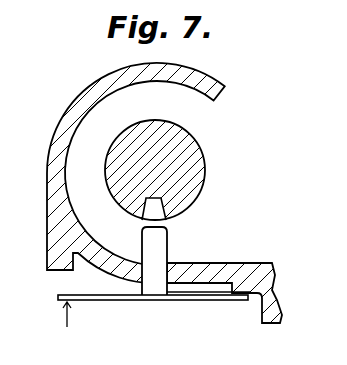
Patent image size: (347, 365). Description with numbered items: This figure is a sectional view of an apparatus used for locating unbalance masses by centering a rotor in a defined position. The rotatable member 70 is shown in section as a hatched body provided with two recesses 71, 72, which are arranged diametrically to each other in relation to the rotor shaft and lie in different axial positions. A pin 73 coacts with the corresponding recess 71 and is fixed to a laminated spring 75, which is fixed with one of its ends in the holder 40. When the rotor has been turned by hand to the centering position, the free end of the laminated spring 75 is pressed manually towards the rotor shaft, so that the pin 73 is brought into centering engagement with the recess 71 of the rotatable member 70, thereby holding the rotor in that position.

The holder 40 is at (55, 271).
The rotatable member 70 is at (190, 149).
The recess 71 is at (157, 212).
The recess 72 is at (153, 140).
The pin 73 is at (163, 292).
The laminated spring 75 is at (114, 300).